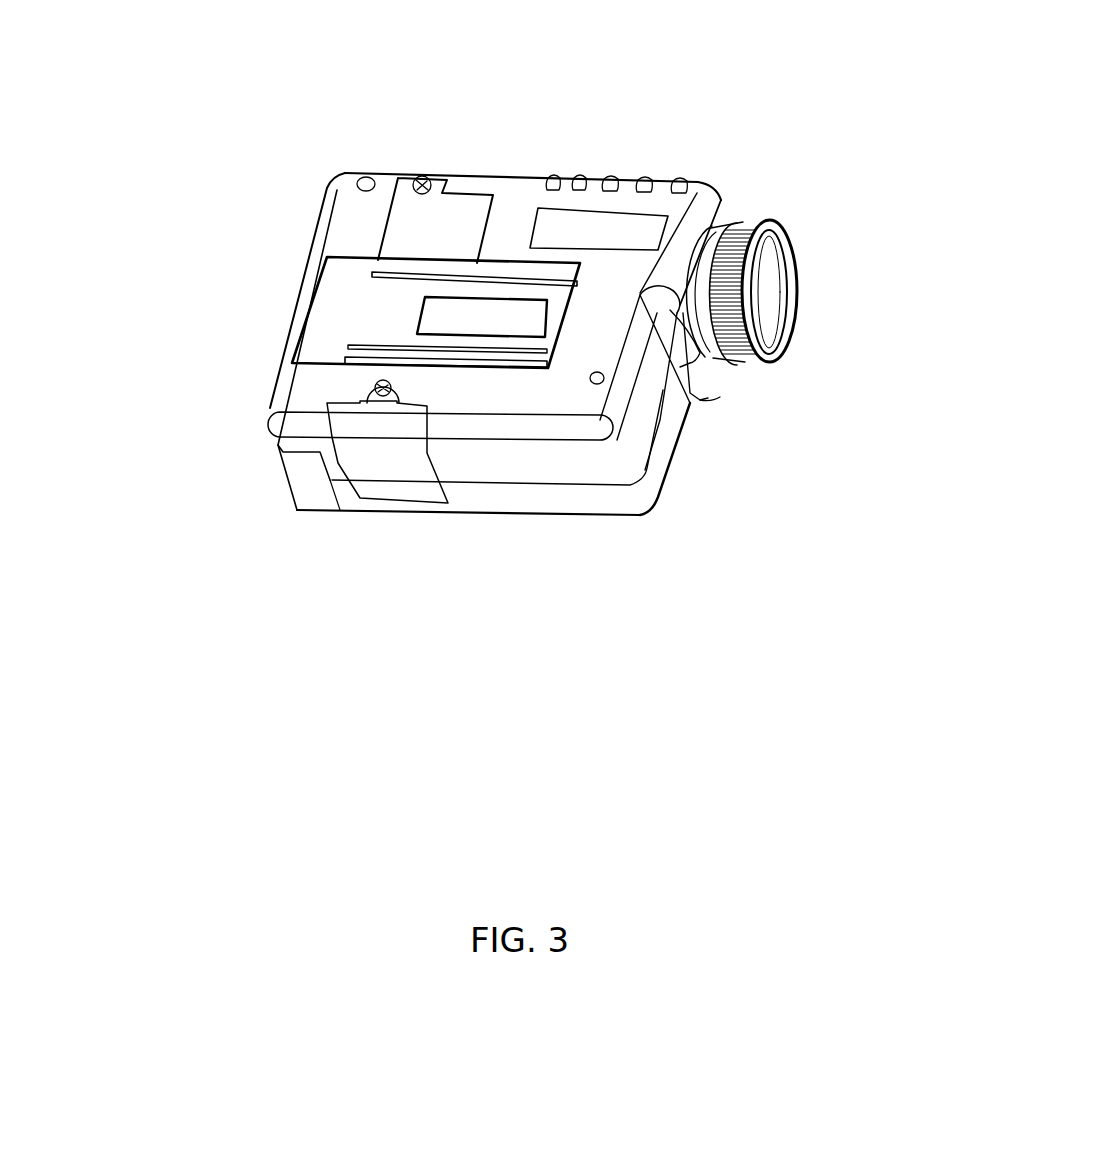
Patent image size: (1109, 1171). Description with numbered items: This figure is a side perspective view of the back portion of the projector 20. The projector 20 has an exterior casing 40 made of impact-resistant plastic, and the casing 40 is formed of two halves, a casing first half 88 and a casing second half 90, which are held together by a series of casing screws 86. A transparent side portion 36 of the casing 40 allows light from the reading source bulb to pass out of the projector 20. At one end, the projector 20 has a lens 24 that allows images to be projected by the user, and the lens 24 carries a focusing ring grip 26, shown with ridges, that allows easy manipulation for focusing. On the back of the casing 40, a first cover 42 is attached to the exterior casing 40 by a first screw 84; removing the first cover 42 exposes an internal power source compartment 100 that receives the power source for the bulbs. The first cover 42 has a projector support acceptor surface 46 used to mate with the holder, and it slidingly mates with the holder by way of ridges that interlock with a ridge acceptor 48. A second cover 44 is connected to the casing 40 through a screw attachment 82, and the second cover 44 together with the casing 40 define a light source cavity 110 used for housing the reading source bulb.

The projector 20 is at (738, 707).
The lens 24 is at (727, 228).
The focusing ring grip 26 is at (757, 363).
The transparent side portion 36 is at (306, 472).
The casing 40 is at (585, 455).
The first cover 42 is at (450, 217).
The second cover 44 is at (363, 457).
The projector support acceptor surface 46 is at (340, 303).
The ridge acceptor 48 is at (375, 273).
The screw attachment 82 is at (372, 388).
The first screw 84 is at (407, 175).
The casing screws 86 is at (357, 184).
The casing first half 88 is at (475, 497).
The casing second half 90 is at (601, 386).
The power source compartment 100 is at (113, 341).
The light source cavity 110 is at (397, 497).